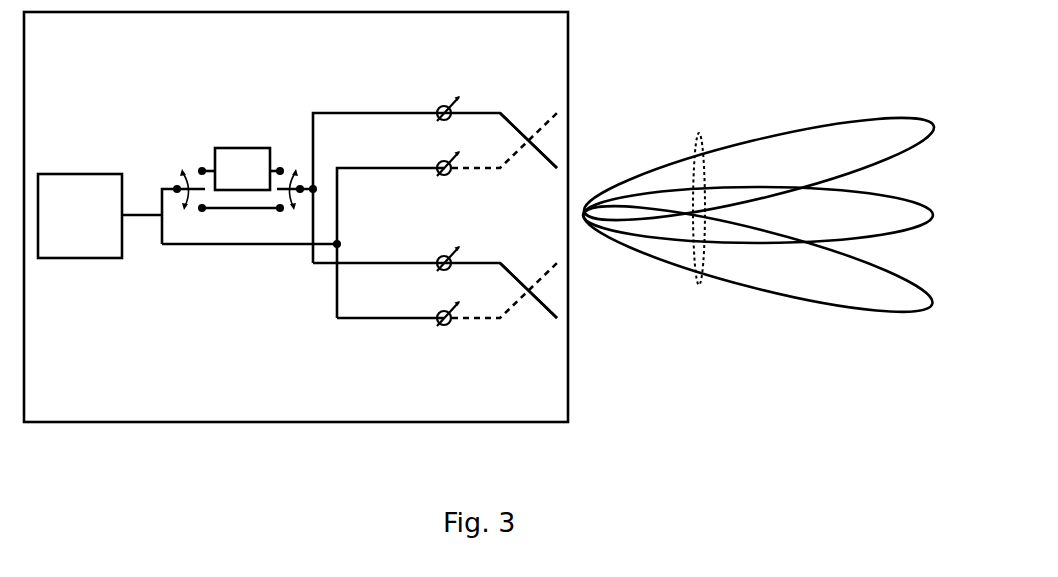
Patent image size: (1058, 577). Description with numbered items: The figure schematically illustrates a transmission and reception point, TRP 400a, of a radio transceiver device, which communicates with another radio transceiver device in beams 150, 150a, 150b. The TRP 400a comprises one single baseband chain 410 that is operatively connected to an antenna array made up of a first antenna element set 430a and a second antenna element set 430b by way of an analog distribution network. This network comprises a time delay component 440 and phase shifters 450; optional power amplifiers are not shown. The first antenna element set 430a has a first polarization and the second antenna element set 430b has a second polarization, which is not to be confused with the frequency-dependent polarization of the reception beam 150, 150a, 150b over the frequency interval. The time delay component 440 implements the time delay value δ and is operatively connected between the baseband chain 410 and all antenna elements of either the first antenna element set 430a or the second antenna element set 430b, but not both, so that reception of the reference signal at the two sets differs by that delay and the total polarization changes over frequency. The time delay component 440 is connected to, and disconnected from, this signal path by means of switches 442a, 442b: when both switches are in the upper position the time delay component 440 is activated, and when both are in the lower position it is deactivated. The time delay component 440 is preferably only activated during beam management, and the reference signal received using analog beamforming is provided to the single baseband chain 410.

The TRP 400a is at (110, 388).
The baseband chain 410 is at (81, 172).
The time delay component 440 is at (222, 148).
The switch 442a is at (192, 196).
The switch 442b is at (290, 196).
The phase shifters 450 is at (443, 103).
The first antenna element set 430a is at (546, 324).
The second antenna element set 430b is at (534, 281).
The beam 150 is at (699, 132).
The beam 150a is at (758, 169).
The beam 150b is at (757, 259).